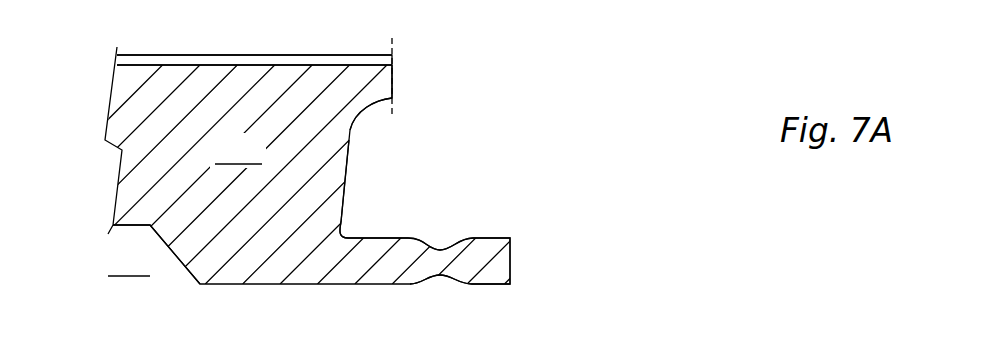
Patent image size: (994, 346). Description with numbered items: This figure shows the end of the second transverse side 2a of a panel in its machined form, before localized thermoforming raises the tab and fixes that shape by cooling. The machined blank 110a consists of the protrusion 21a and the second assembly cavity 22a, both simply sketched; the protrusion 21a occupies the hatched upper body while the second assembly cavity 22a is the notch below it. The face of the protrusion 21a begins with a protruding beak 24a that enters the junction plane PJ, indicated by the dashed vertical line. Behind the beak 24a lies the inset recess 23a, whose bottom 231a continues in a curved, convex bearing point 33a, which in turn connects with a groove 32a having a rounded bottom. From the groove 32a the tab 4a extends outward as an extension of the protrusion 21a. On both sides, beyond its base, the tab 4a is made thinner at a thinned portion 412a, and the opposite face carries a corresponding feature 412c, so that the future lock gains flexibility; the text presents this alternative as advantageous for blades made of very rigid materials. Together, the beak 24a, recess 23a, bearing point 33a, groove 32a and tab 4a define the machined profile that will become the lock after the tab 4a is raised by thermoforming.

The second transverse side 2a is at (507, 125).
The protrusion 21a is at (238, 152).
The second assembly cavity 22a is at (154, 254).
The inset recess 23a is at (370, 123).
The bottom of the inset recess 231a is at (347, 158).
The protruding beak 24a is at (392, 83).
The groove 32a is at (340, 230).
The bearing point 33a is at (345, 203).
The tab 4a is at (512, 258).
The thinned portion of the tab 412a is at (440, 240).
The projection 412c is at (440, 285).
The machined blank 110a is at (150, 42).
The junction plane PJ is at (404, 65).